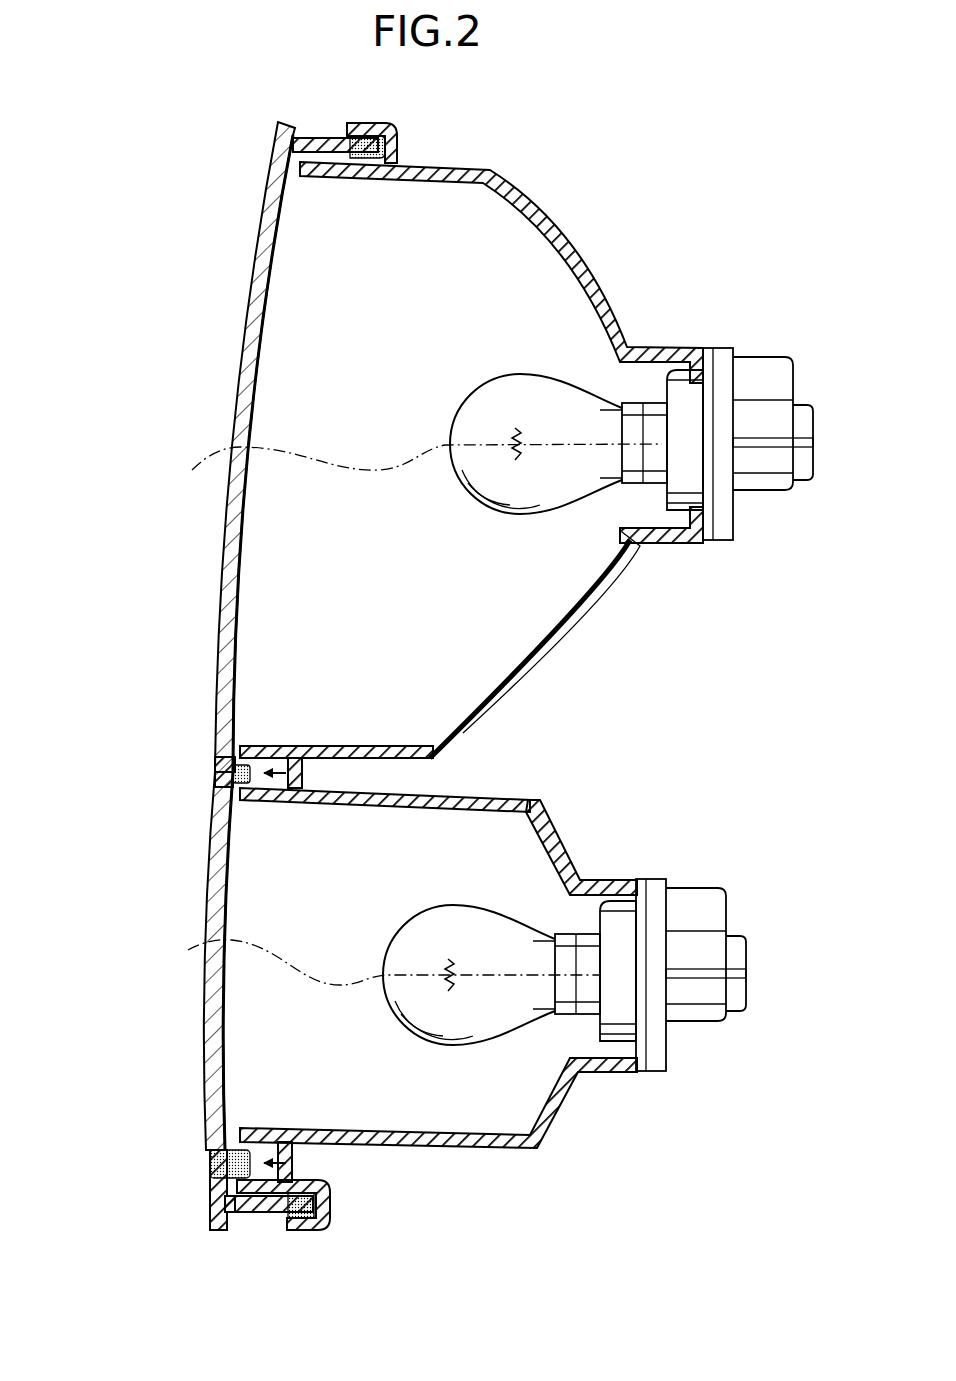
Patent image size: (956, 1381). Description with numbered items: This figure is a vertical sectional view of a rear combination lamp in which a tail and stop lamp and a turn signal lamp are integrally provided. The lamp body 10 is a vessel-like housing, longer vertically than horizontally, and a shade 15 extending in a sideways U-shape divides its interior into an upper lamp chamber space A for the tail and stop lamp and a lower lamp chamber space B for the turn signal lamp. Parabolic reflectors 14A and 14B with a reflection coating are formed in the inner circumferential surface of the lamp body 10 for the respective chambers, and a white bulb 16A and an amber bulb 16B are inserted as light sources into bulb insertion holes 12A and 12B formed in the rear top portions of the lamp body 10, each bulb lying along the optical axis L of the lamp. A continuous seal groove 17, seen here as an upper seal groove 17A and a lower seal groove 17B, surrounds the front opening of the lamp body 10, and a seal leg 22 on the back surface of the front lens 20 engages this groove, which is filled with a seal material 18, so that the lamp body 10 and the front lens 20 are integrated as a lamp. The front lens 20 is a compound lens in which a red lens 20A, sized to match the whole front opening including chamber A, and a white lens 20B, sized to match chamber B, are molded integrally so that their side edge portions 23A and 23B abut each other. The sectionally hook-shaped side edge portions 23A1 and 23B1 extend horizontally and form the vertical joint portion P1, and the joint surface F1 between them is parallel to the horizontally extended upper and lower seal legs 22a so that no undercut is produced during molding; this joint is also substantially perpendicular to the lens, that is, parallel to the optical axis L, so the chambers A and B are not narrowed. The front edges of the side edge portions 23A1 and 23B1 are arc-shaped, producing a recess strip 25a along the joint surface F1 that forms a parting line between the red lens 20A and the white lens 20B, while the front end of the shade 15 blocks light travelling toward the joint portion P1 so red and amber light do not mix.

The lamp body 10 is at (592, 230).
The bulb insertion hole 12A is at (720, 385).
The bulb insertion hole 12B is at (650, 925).
The parabolic reflector 14A is at (548, 632).
The parabolic reflector 14B is at (575, 862).
The shade 15 is at (322, 746).
The white bulb 16A is at (558, 390).
The amber bulb 16B is at (482, 1046).
The seal groove 17 is at (371, 654).
The seal groove 17A is at (390, 130).
The seal groove 17B is at (332, 1222).
The seal material 18 is at (398, 158).
The front lens 20 is at (162, 636).
The red lens 20A is at (226, 520).
The white lens 20B is at (206, 897).
The seal leg 22 is at (318, 138).
The seal leg 22a is at (335, 145).
The side edge portion 23A is at (230, 758).
The side edge portion 23A1 is at (225, 764).
The side edge portion 23B is at (228, 800).
The side edge portion 23B1 is at (224, 779).
The recess strip 25a is at (222, 774).
The joint surface F1 is at (222, 764).
The joint portion P1 is at (302, 782).
The optical axis L is at (416, 714).
The lamp chamber space A is at (367, 353).
The lamp chamber space B is at (330, 918).